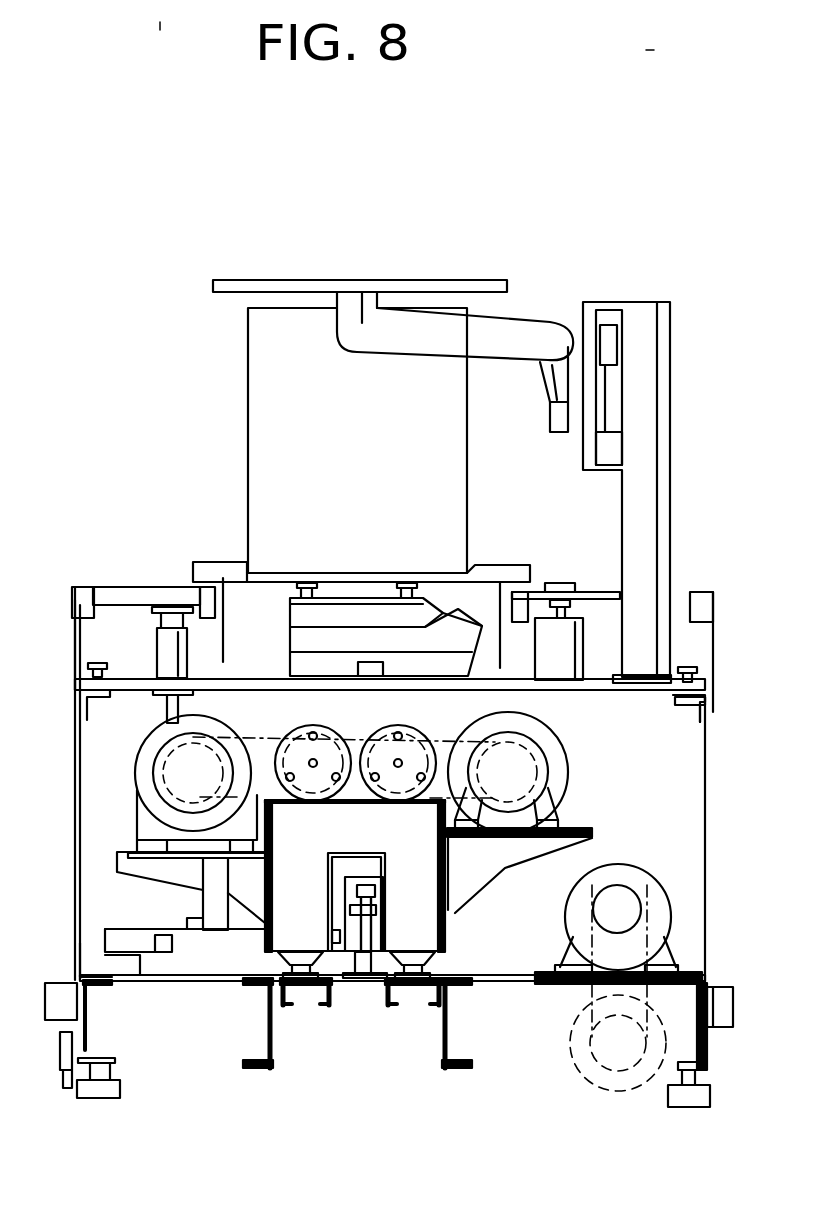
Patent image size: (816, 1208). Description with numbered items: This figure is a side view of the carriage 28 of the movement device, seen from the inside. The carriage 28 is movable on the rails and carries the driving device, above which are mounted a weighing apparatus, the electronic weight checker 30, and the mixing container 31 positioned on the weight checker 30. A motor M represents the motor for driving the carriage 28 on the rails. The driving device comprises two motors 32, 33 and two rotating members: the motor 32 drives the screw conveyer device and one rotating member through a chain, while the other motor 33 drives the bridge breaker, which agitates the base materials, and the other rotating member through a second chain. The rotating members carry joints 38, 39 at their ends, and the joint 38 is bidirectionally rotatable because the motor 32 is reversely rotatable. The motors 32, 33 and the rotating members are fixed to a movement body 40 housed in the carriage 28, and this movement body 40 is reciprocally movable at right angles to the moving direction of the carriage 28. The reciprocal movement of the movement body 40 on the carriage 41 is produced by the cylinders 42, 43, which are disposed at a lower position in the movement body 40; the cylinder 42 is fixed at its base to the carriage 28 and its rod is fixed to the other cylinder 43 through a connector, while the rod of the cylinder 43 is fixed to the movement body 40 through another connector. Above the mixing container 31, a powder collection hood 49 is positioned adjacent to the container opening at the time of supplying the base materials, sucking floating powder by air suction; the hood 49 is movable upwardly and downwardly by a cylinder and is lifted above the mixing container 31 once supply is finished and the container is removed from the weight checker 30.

The carriage 28 is at (127, 673).
The electronic weight checker 30 is at (300, 615).
The mixing container 31 is at (363, 482).
The motor 32 is at (150, 770).
The motor 33 is at (540, 765).
The joint 38 is at (290, 730).
The joint 39 is at (400, 728).
The movement body 40 is at (432, 935).
The carriage 41 is at (407, 985).
The cylinder 42 is at (363, 985).
The cylinder 43 is at (341, 993).
The powder collection hood 49 is at (396, 282).
The motor M is at (653, 903).